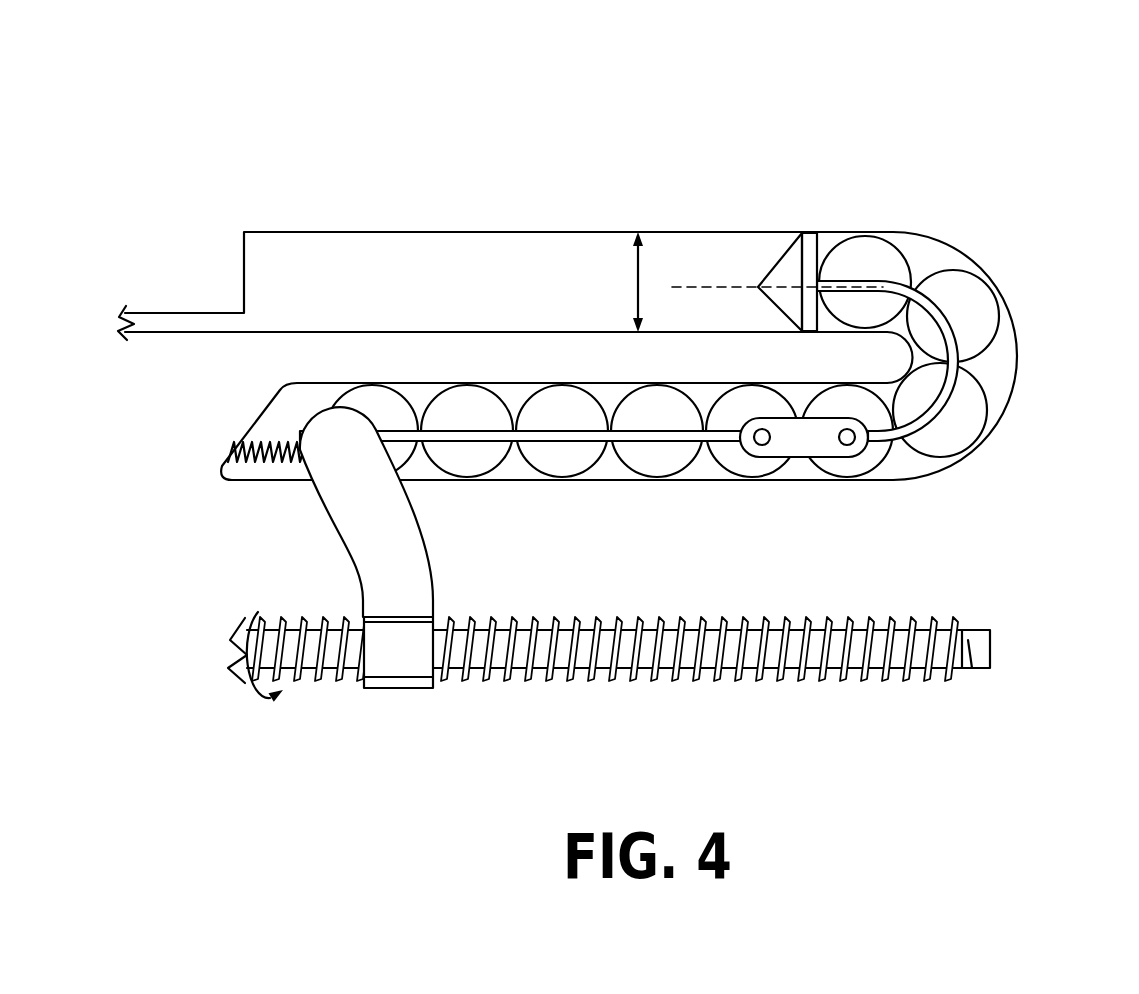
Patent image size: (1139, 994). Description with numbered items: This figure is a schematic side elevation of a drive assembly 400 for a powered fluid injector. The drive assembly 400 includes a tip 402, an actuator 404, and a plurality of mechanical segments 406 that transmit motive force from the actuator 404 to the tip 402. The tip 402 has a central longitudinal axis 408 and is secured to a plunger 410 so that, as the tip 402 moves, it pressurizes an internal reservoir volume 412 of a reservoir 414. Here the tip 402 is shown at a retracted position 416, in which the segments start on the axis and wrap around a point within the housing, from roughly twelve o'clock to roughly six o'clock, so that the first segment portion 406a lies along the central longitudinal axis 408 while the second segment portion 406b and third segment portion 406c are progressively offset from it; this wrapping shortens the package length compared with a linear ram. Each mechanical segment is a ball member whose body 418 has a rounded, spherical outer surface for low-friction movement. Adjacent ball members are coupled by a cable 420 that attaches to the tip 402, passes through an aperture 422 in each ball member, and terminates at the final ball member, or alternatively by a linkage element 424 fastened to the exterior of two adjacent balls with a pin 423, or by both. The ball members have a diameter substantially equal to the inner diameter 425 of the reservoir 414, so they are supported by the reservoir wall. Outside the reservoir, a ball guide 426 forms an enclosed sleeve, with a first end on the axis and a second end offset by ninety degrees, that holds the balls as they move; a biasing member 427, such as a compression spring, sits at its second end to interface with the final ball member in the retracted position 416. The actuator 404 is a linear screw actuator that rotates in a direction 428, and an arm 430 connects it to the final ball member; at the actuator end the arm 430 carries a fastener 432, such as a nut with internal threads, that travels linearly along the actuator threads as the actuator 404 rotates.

The drive assembly 400 is at (619, 413).
The tip 402 is at (809, 260).
The actuator 404 is at (697, 673).
The plurality of mechanical segments 406 is at (992, 423).
The first segment portion 406a is at (869, 245).
The second segment portion 406b is at (994, 297).
The third segment portion 406c is at (866, 483).
The central longitudinal axis 408 is at (689, 286).
The plunger 410 is at (787, 265).
The internal reservoir volume 412 is at (443, 249).
The reservoir 414 is at (524, 232).
The retracted position 416 is at (765, 222).
The body 418 is at (973, 389).
The cable 420 is at (653, 435).
The aperture 422 is at (678, 440).
The pin 423 is at (845, 447).
The linkage element 424 is at (785, 440).
The inner diameter 425 is at (637, 278).
The ball guide 426 is at (513, 480).
The biasing member 427 is at (280, 448).
The direction 428 is at (250, 687).
The arm 430 is at (365, 510).
The fastener 432 is at (398, 650).